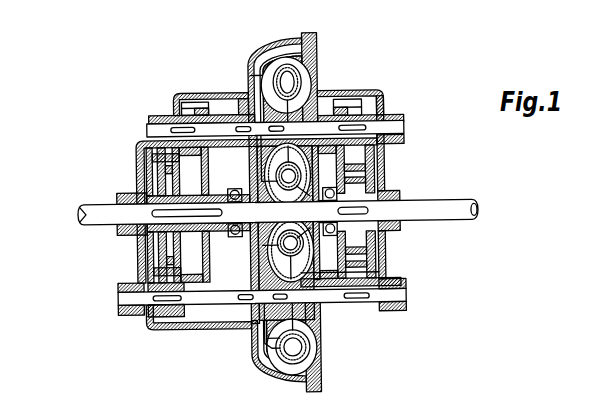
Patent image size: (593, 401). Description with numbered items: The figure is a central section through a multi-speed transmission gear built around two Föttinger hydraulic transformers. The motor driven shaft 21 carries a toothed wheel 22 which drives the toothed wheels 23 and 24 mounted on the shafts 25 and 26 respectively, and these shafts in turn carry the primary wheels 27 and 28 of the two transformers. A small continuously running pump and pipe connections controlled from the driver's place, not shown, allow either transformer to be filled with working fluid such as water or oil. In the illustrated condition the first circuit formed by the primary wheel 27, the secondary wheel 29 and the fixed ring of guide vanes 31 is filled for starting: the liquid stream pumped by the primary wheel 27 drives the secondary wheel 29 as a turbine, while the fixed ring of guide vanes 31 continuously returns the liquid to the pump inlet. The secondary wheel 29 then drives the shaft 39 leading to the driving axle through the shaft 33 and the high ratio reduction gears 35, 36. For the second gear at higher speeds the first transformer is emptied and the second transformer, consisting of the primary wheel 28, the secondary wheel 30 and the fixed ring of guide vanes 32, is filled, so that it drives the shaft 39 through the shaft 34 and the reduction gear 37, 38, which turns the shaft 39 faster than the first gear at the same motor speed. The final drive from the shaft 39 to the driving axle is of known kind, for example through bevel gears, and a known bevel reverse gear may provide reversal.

The motor driven shaft 21 is at (407, 213).
The toothed wheel 22 is at (350, 162).
The toothed wheel 23 is at (378, 273).
The toothed wheel 24 is at (342, 100).
The shaft 25 is at (395, 296).
The shaft 26 is at (395, 128).
The primary wheel 27 is at (263, 343).
The primary wheel 28 is at (252, 75).
The secondary wheel 29 is at (287, 365).
The secondary wheel 30 is at (258, 57).
The fixed ring of guide vanes 31 is at (308, 348).
The fixed ring of guide vanes 32 is at (303, 78).
The shaft 33 is at (142, 298).
The shaft 34 is at (166, 134).
The high ratio reduction gear 35 is at (147, 282).
The high ratio reduction gear 36 is at (150, 250).
The reduction gear 37 is at (192, 108).
The reduction gear 38 is at (163, 183).
The shaft 39 is at (100, 212).